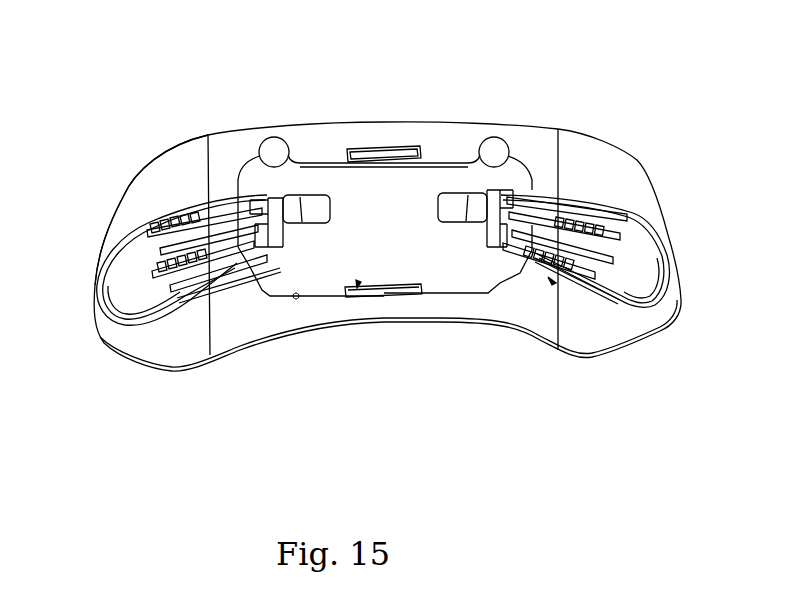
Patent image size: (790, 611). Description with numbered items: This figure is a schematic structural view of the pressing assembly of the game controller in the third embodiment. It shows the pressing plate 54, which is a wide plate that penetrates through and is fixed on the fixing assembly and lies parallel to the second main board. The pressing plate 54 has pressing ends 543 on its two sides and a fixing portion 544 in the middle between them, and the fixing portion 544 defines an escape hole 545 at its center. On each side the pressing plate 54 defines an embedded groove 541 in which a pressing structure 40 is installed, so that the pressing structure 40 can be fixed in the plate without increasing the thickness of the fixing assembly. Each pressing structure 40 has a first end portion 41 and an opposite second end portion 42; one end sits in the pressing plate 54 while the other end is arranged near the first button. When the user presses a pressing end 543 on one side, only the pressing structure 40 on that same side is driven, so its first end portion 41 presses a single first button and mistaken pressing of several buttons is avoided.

The pressing structure 40 is at (130, 277).
The first end portion 41 is at (650, 260).
The second end portion 42 is at (313, 217).
The pressing plate 54 is at (182, 348).
The embedded groove 541 is at (553, 278).
The pressing end 543 is at (178, 172).
The fixing portion 544 is at (392, 137).
The escape hole 545 is at (358, 287).